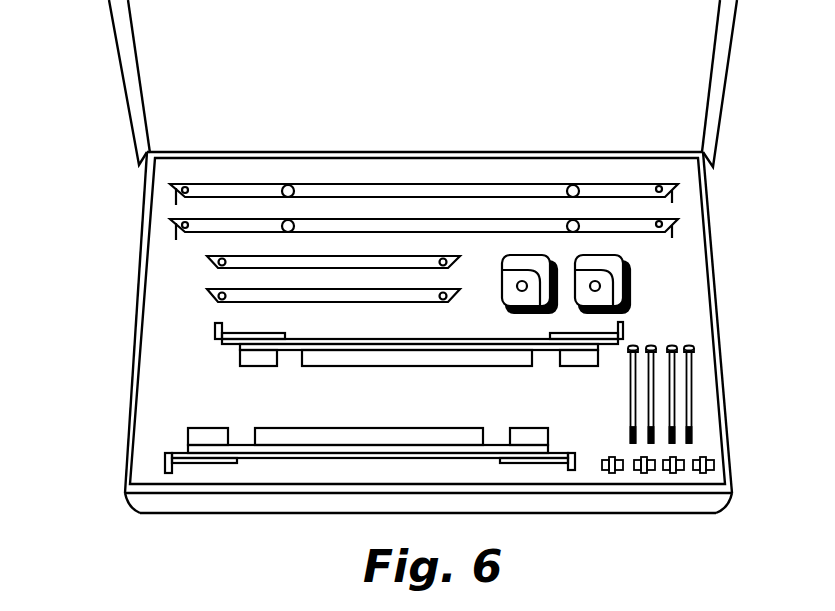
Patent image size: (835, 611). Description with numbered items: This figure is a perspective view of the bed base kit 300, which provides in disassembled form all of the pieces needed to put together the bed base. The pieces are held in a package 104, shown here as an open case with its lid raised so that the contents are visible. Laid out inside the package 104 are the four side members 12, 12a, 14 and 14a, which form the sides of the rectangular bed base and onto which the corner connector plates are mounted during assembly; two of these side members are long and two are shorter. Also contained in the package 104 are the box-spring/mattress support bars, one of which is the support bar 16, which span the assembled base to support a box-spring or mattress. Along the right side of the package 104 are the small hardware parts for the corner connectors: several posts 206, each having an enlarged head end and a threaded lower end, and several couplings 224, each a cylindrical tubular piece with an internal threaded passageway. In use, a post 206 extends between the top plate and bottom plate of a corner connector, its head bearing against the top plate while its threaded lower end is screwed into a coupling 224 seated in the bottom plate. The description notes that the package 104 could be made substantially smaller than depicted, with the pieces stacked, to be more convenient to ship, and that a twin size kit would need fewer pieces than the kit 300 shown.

The bed base kit 300 is at (108, 207).
The package 104 is at (126, 358).
The side member 12 is at (340, 187).
The side member 12a is at (256, 233).
The side member 14 is at (247, 256).
The side member 14a is at (245, 300).
The box-spring/mattress support bar 16 is at (325, 443).
The post 206 is at (673, 400).
The coupling 224 is at (645, 475).